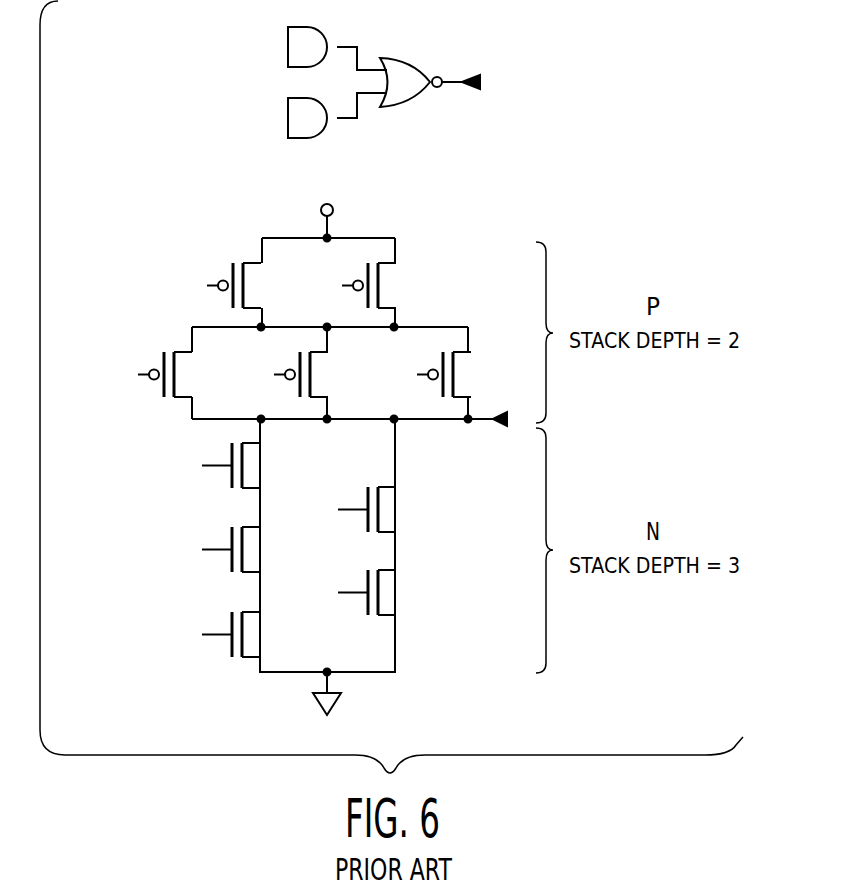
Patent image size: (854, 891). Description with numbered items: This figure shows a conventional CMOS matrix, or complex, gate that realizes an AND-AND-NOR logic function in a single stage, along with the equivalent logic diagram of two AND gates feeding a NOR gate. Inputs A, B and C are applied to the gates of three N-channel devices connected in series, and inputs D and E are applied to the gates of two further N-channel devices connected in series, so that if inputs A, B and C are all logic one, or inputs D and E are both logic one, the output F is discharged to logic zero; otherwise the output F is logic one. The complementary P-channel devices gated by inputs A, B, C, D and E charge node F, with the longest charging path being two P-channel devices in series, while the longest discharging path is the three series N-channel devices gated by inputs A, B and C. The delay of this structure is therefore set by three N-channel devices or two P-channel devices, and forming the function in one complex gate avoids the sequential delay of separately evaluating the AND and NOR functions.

The input A is at (288, 33).
The input B is at (288, 45).
The input C is at (288, 62).
The input D is at (288, 106).
The input E is at (288, 132).
The output F is at (483, 251).